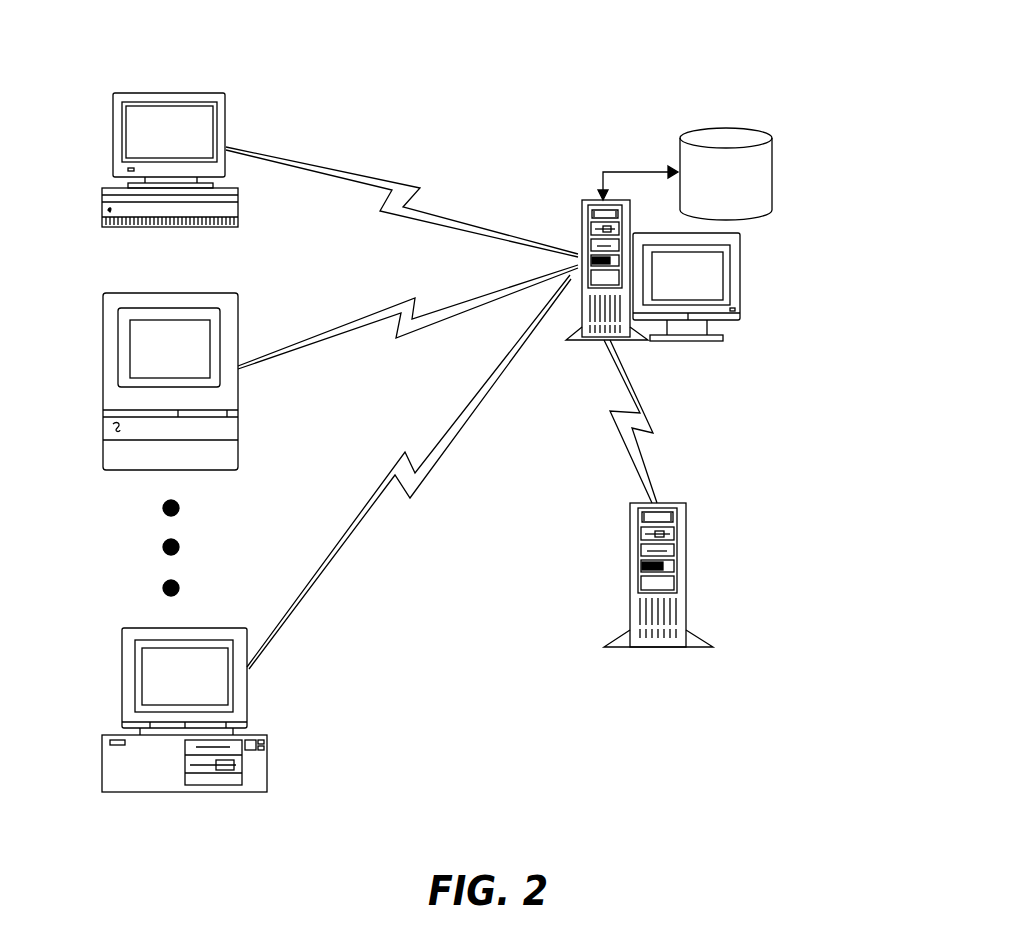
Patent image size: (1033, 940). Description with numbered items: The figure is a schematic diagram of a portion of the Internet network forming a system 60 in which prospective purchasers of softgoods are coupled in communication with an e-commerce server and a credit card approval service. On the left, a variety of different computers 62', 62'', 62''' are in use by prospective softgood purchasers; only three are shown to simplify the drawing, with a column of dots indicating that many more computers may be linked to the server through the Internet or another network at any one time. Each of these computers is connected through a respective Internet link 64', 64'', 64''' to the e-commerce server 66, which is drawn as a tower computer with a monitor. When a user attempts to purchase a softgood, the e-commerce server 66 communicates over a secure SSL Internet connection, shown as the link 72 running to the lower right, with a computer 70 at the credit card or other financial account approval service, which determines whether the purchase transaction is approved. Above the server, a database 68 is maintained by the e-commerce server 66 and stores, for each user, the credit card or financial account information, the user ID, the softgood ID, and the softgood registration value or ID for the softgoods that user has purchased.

The system 60 is at (309, 806).
The computer 62' is at (194, 160).
The computer 62'' is at (199, 380).
The computer 62''' is at (207, 710).
The Internet link 64' is at (402, 195).
The Internet link 64'' is at (408, 317).
The Internet link 64''' is at (409, 472).
The e-commerce server 66 is at (581, 226).
The database 68 is at (772, 188).
The computer at credit card approval service 70 is at (687, 548).
The connection to credit card approval service 72 is at (638, 440).